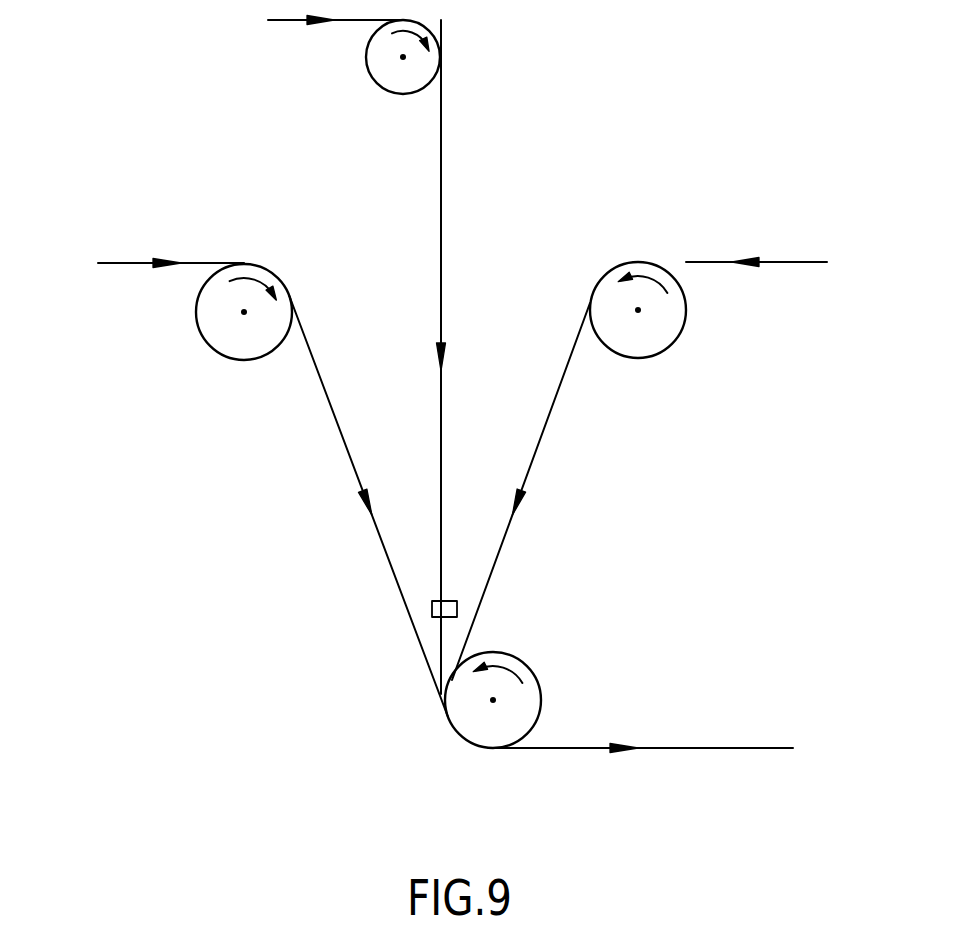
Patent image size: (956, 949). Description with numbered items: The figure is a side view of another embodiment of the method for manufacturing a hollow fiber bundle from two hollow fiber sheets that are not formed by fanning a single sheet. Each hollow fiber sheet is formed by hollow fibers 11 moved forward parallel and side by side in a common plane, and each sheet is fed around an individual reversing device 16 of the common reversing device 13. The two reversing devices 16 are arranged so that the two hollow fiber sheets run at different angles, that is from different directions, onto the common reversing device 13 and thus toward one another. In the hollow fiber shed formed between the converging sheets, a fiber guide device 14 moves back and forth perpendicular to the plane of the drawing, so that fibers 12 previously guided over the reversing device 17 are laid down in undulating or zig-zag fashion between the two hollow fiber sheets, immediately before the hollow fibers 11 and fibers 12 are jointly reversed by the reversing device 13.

The hollow fibers 11 is at (348, 458).
The fibers 12 is at (443, 228).
The common reversing device 13 is at (478, 720).
The fiber guide device 14 is at (440, 617).
The individual reversing device 16 is at (225, 335).
The reversing device 17 is at (393, 72).